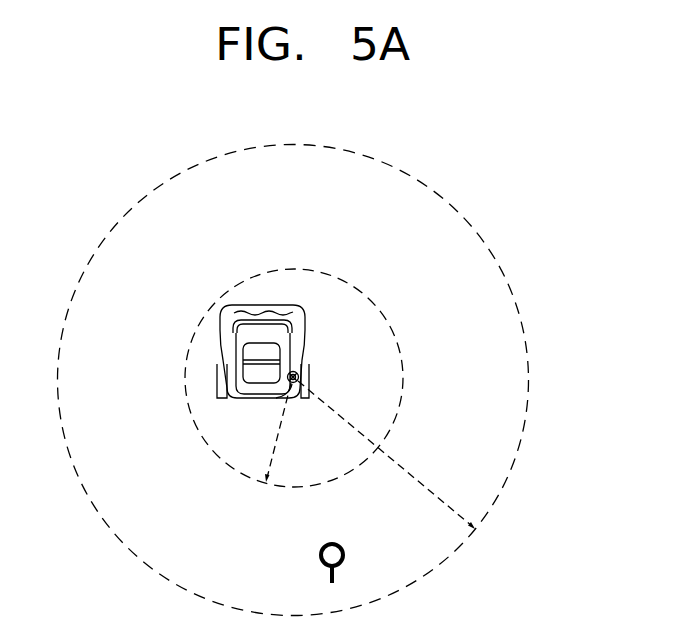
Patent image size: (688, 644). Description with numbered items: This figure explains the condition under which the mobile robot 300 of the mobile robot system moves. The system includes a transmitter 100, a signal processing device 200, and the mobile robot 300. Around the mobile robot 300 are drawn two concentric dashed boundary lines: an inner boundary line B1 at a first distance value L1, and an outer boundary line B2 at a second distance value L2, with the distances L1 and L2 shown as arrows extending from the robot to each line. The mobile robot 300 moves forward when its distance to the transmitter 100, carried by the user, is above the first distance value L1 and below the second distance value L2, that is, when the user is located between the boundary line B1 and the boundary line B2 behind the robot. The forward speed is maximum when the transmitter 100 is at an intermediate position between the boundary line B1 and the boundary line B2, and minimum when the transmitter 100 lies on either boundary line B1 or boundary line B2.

The transmitter 100 is at (344, 549).
The signal processing device 200 is at (300, 378).
The mobile robot 300 is at (305, 332).
The boundary line of the first distance value B1 is at (396, 347).
The boundary line of the second distance value B2 is at (515, 300).
The first distance value L1 is at (266, 479).
The second distance value L2 is at (475, 528).